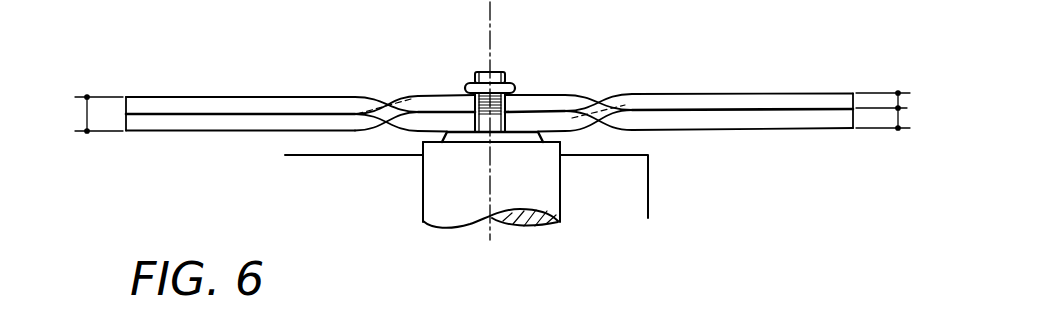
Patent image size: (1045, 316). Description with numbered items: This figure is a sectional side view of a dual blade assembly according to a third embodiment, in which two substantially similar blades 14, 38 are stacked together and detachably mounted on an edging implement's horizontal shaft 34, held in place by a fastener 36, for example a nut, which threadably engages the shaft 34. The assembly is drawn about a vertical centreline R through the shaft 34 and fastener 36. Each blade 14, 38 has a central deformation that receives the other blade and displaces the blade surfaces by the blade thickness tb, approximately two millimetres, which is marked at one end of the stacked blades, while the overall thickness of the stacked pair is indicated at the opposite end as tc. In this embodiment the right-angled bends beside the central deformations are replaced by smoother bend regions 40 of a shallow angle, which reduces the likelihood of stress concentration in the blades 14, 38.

The second blade 14 is at (193, 105).
The blade 38 is at (198, 124).
The bend regions 40 is at (368, 97).
The horizontal shaft 34 is at (505, 72).
The fastener 36 is at (463, 88).
The axis of rotation R is at (490, 32).
The center thickness tc is at (87, 110).
The blade thickness tb is at (900, 115).